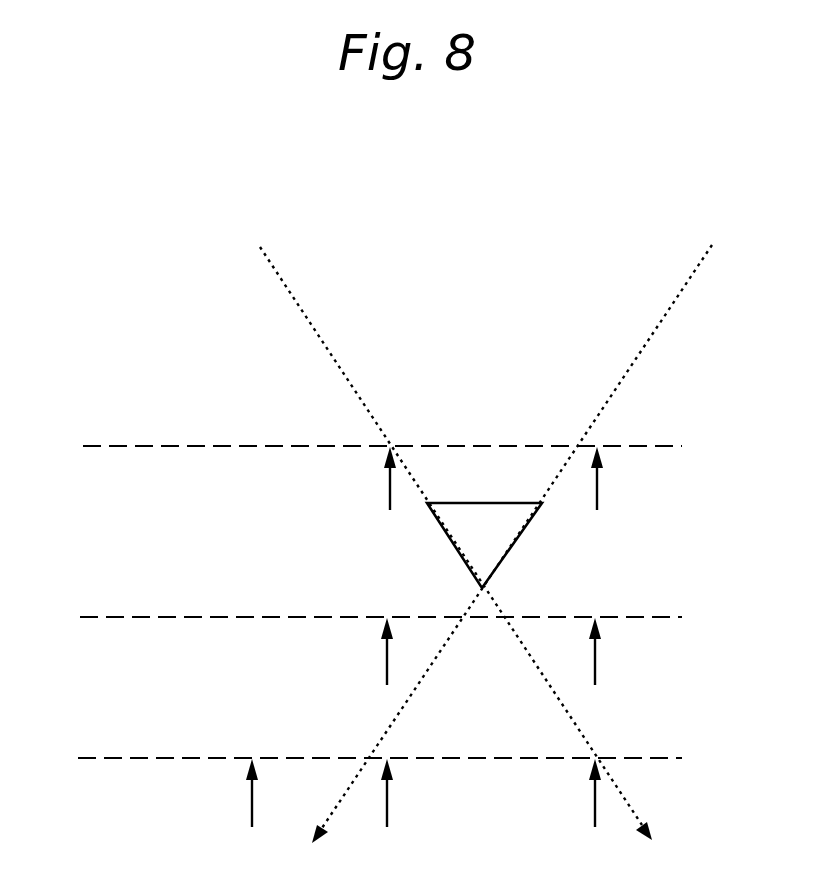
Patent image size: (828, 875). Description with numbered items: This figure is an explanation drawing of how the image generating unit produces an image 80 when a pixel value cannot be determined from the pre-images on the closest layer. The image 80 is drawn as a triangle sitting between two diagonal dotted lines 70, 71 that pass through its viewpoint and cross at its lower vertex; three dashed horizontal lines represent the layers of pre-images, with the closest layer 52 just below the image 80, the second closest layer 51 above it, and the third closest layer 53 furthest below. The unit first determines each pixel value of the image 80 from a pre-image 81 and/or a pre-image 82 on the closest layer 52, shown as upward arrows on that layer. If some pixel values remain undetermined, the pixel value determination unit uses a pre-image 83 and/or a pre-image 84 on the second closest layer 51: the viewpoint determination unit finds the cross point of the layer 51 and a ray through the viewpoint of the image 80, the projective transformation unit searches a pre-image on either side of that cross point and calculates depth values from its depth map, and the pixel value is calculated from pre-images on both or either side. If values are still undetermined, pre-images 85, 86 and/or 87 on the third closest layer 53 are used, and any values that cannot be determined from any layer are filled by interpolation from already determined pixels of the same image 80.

The second closest layer 51 is at (123, 445).
The closest layer 52 is at (121, 616).
The third closest layer 53 is at (119, 757).
The first light path 70 is at (283, 286).
The second light path 71 is at (688, 282).
The image 80 is at (483, 503).
The pre-image 81 is at (387, 682).
The pre-image 82 is at (595, 680).
The pre-image 83 is at (390, 510).
The pre-image 84 is at (597, 510).
The pre-image 85 is at (252, 825).
The pre-image 86 is at (387, 822).
The pre-image 87 is at (595, 825).